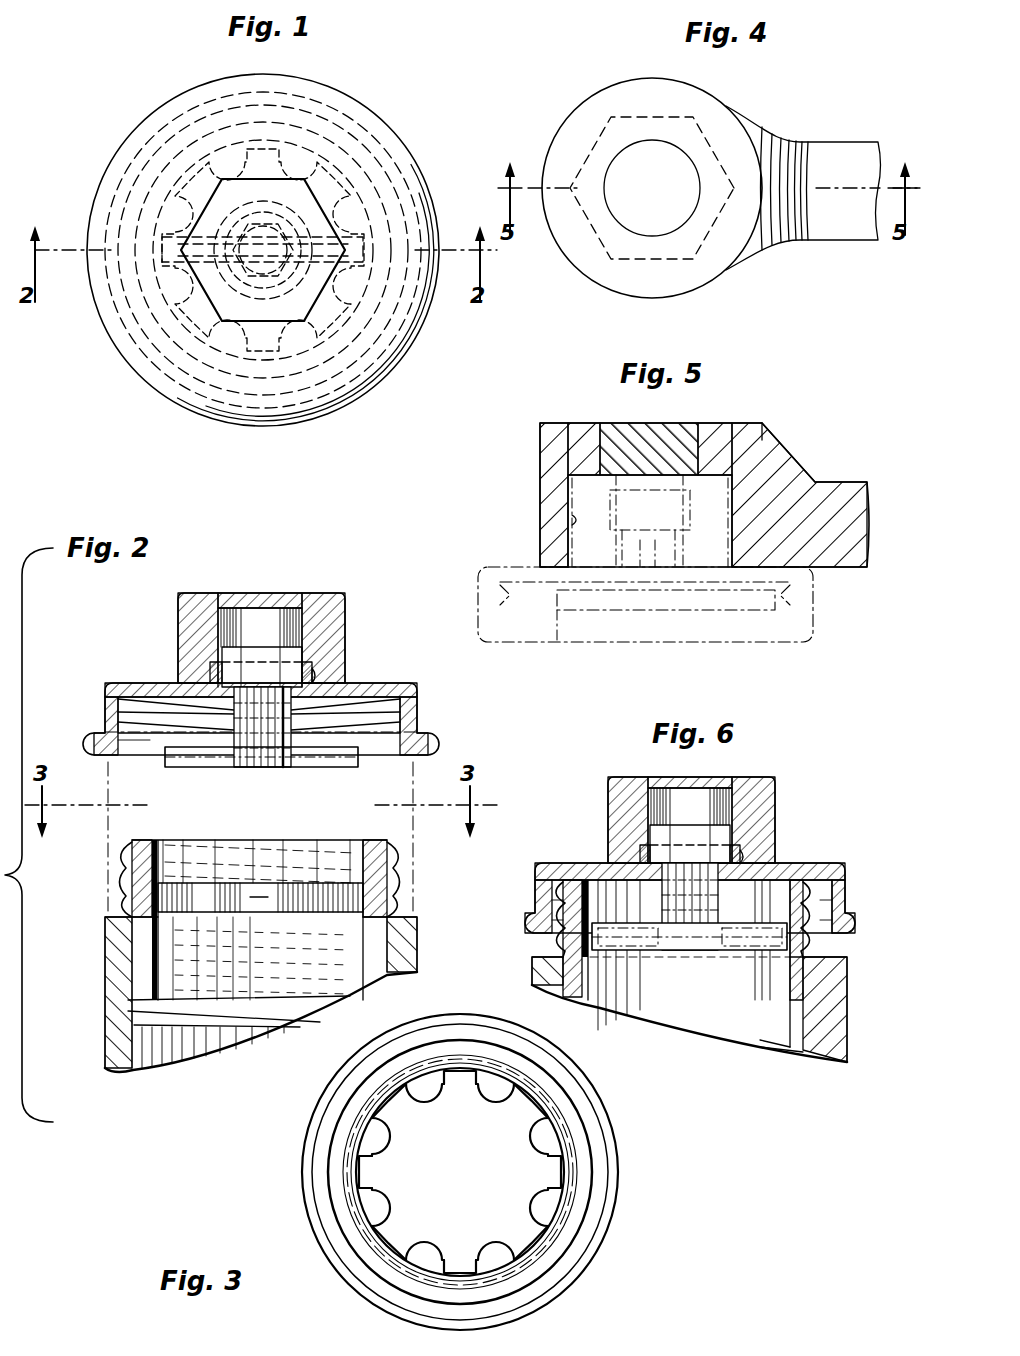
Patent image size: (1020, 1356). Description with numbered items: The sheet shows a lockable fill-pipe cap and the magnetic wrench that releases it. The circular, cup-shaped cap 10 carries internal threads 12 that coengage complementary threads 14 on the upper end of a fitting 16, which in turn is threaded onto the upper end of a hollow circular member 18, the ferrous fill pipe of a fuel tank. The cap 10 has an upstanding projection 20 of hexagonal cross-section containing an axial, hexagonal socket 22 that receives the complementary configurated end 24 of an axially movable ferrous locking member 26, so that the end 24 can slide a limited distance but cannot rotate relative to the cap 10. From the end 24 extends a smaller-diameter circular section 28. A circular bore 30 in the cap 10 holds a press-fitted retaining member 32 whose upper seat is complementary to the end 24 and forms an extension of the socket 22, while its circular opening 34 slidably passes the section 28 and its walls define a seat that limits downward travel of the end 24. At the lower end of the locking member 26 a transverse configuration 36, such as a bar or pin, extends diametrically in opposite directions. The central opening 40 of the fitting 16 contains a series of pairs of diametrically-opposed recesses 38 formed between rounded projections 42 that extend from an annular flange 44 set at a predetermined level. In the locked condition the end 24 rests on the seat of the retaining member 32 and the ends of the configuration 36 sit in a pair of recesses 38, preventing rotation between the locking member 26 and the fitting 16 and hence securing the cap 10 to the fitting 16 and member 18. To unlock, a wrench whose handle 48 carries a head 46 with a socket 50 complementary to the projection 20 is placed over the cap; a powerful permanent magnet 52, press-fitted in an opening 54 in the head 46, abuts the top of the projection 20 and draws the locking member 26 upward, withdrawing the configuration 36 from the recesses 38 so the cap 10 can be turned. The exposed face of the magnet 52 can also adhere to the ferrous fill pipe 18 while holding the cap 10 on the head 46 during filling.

In FIG. 1, the cap 10 is at (420, 169).
In FIG. 5, the cap 10 is at (815, 632).
In FIG. 2, the cap 10 is at (395, 690).
In FIG. 6, the cap 10 is at (845, 878).
In FIG. 2, the threads 12 is at (358, 757).
In FIG. 2, the complementary threads 14 is at (398, 890).
In FIG. 6, the complementary threads 14 is at (683, 940).
In FIG. 3, the complementary threads 14 is at (598, 1138).
In FIG. 2, the fitting 16 is at (110, 872).
In FIG. 6, the fitting 16 is at (545, 946).
In FIG. 3, the fitting 16 is at (306, 1124).
In FIG. 2, the hollow circular member 18 is at (105, 1036).
In FIG. 6, the hollow circular member 18 is at (847, 1002).
In FIG. 3, the hollow circular member 18 is at (603, 1230).
In FIG. 1, the upstanding projection 20 is at (314, 307).
In FIG. 5, the upstanding projection 20 is at (560, 491).
In FIG. 2, the upstanding projection 20 is at (343, 600).
In FIG. 6, the upstanding projection 20 is at (775, 803).
In FIG. 1, the socket 22 is at (246, 205).
In FIG. 2, the socket 22 is at (258, 614).
In FIG. 6, the socket 22 is at (698, 800).
In FIG. 2, the configurated end 24 is at (222, 656).
In FIG. 6, the configurated end 24 is at (655, 835).
In FIG. 5, the locking member 26 is at (653, 617).
In FIG. 2, the locking member 26 is at (263, 778).
In FIG. 6, the locking member 26 is at (655, 898).
In FIG. 2, the section 28 is at (228, 730).
In FIG. 6, the section 28 is at (720, 918).
In FIG. 1, the circular bore 30 is at (274, 205).
In FIG. 2, the circular bore 30 is at (320, 676).
In FIG. 6, the circular bore 30 is at (775, 848).
In FIG. 2, the retaining member 32 is at (212, 670).
In FIG. 6, the retaining member 32 is at (640, 853).
In FIG. 2, the circular opening 34 is at (168, 745).
In FIG. 5, the transverse configuration 36 is at (590, 612).
In FIG. 2, the transverse configuration 36 is at (338, 767).
In FIG. 6, the transverse configuration 36 is at (830, 918).
In FIG. 6, the recesses 38 is at (772, 962).
In FIG. 3, the recesses 38 is at (460, 1173).
In FIG. 2, the central opening 40 is at (352, 1003).
In FIG. 6, the central opening 40 is at (790, 1018).
In FIG. 3, the central opening 40 is at (460, 1172).
In FIG. 3, the rounded projections 42 is at (460, 1172).
In FIG. 2, the annular flange 44 is at (195, 850).
In FIG. 3, the annular flange 44 is at (360, 1168).
In FIG. 4, the head 46 is at (616, 85).
In FIG. 5, the head 46 is at (574, 423).
In FIG. 4, the wrench handle 48 is at (838, 241).
In FIG. 5, the wrench handle 48 is at (858, 482).
In FIG. 5, the socket 50 is at (566, 524).
In FIG. 4, the permanent magnet 52 is at (652, 236).
In FIG. 5, the permanent magnet 52 is at (664, 423).
In FIG. 5, the opening 54 is at (601, 423).